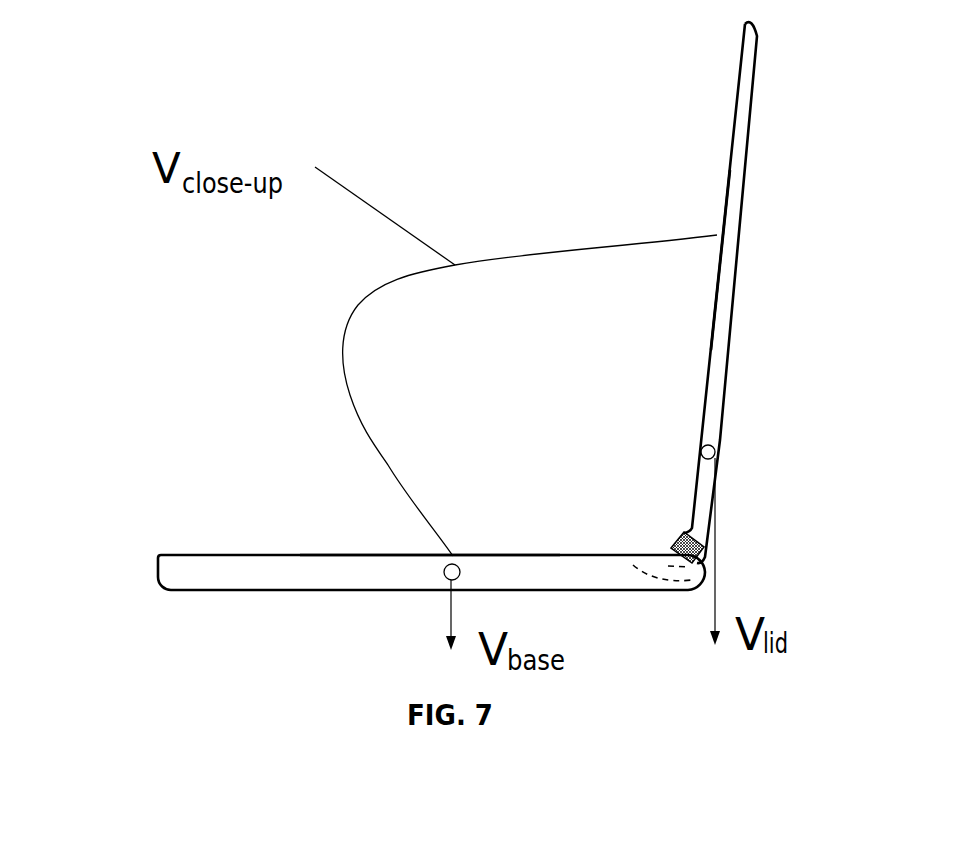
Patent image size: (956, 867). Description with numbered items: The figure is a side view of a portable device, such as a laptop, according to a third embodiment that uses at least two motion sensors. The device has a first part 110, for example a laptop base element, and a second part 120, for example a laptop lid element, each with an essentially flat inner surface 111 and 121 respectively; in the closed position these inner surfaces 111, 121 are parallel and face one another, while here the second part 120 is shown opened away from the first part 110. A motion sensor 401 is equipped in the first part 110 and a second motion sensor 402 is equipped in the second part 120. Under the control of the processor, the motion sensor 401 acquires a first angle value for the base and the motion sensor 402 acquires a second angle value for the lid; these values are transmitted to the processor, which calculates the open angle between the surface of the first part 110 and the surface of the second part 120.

The first part 110 is at (157, 570).
The essentially flat inner surface of the first part 111 is at (422, 556).
The second part 120 is at (723, 397).
The essentially flat inner surface of the second part 121 is at (708, 372).
The motion sensor 401 is at (457, 556).
The motion sensor 402 is at (713, 458).